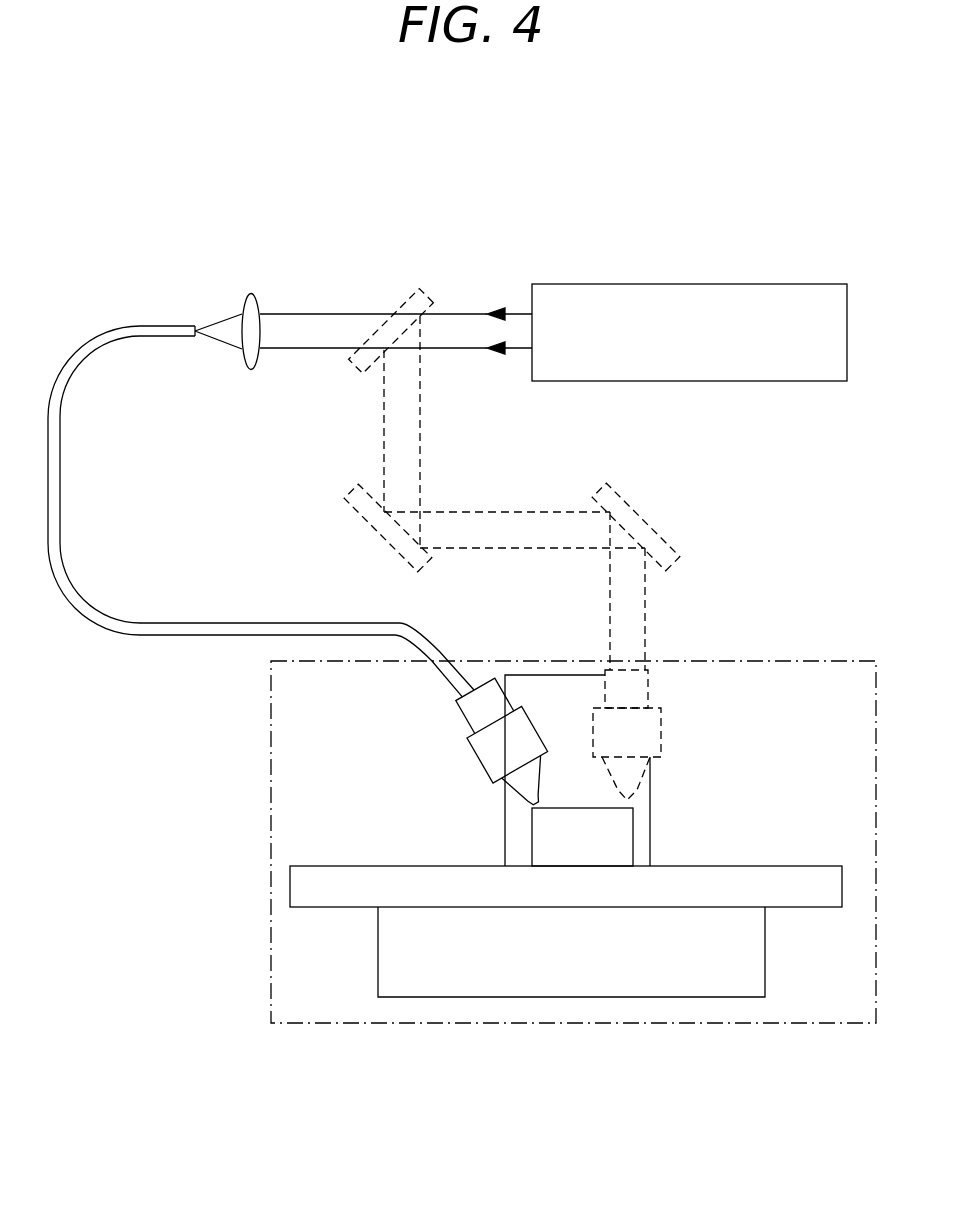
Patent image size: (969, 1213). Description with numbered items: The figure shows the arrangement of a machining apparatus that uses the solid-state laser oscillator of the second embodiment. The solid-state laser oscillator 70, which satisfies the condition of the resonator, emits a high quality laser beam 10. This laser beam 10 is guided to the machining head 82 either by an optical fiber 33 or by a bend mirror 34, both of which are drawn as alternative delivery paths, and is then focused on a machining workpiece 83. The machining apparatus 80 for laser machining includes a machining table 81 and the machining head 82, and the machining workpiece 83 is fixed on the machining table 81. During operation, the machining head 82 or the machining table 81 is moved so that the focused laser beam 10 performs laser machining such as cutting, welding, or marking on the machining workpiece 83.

The laser beam 10 is at (468, 314).
The solid-state laser oscillator 70 is at (667, 284).
The bend mirror 34 is at (385, 348).
The optical fiber 33 is at (205, 628).
The machining apparatus 80 is at (271, 759).
The machining table 81 is at (387, 866).
The machining head 82 is at (522, 708).
The machining workpiece 83 is at (623, 840).